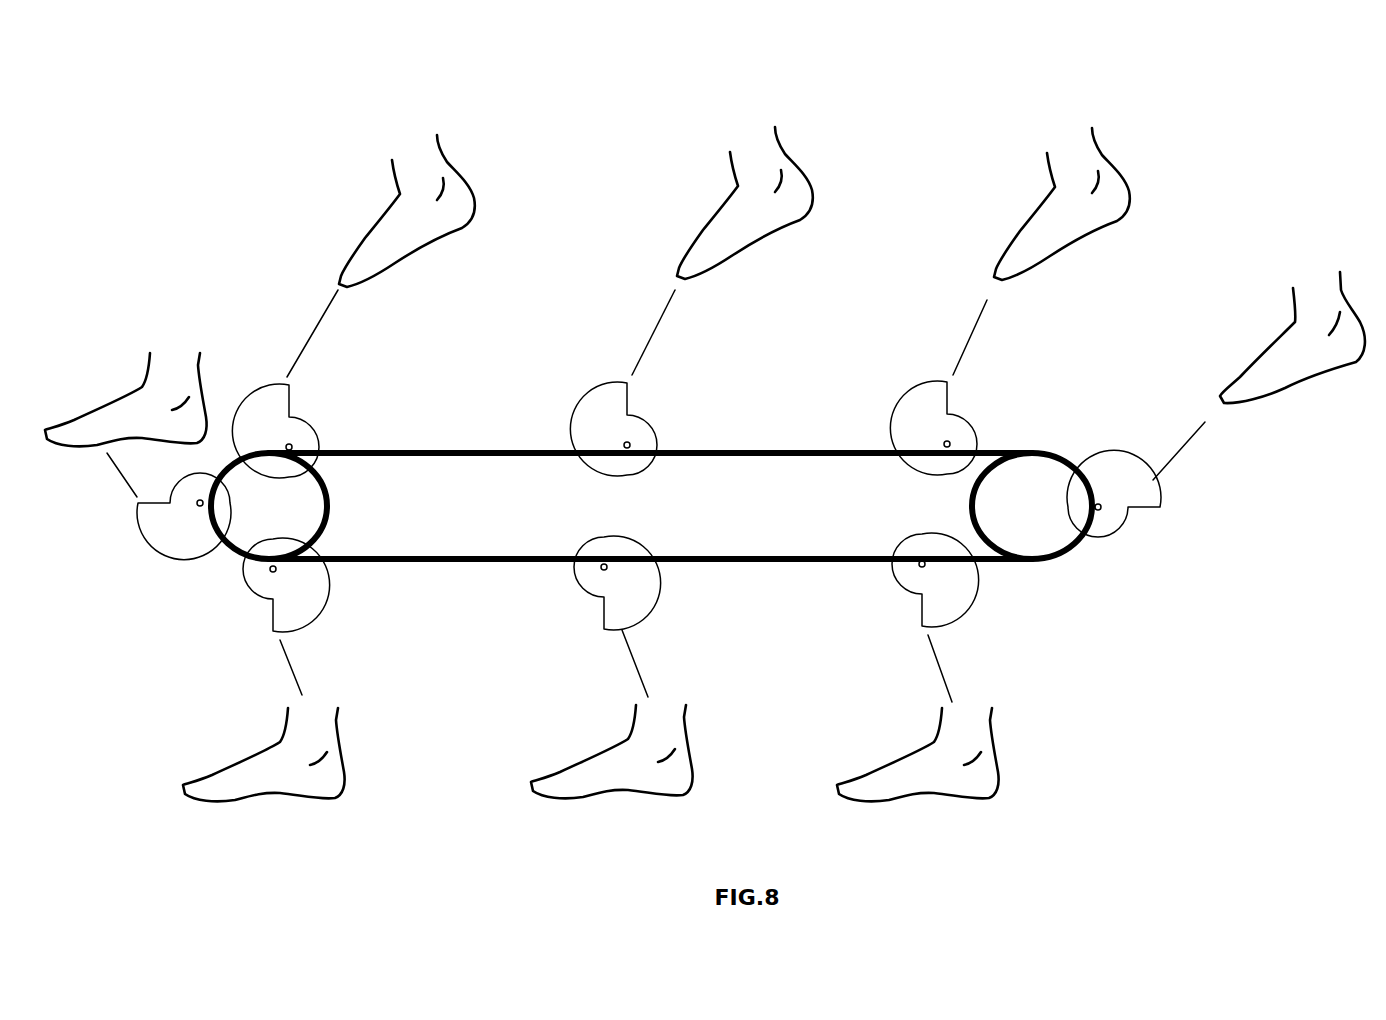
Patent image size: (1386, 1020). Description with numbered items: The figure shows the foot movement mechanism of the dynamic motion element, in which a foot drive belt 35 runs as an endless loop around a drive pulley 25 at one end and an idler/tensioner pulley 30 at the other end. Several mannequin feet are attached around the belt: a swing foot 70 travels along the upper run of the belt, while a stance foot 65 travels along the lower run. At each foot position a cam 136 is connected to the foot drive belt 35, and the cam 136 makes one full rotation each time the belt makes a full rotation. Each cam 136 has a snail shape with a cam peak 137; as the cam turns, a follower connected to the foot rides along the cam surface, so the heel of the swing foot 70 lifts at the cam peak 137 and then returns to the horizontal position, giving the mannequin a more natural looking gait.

The drive pulley 25 is at (1040, 560).
The idler/tensioner pulley 30 is at (233, 548).
The foot drive belt 35 is at (727, 557).
The stance foot 65 is at (522, 792).
The swing foot 70 is at (463, 152).
The cam 136 is at (637, 420).
The cam peak 137 is at (290, 388).